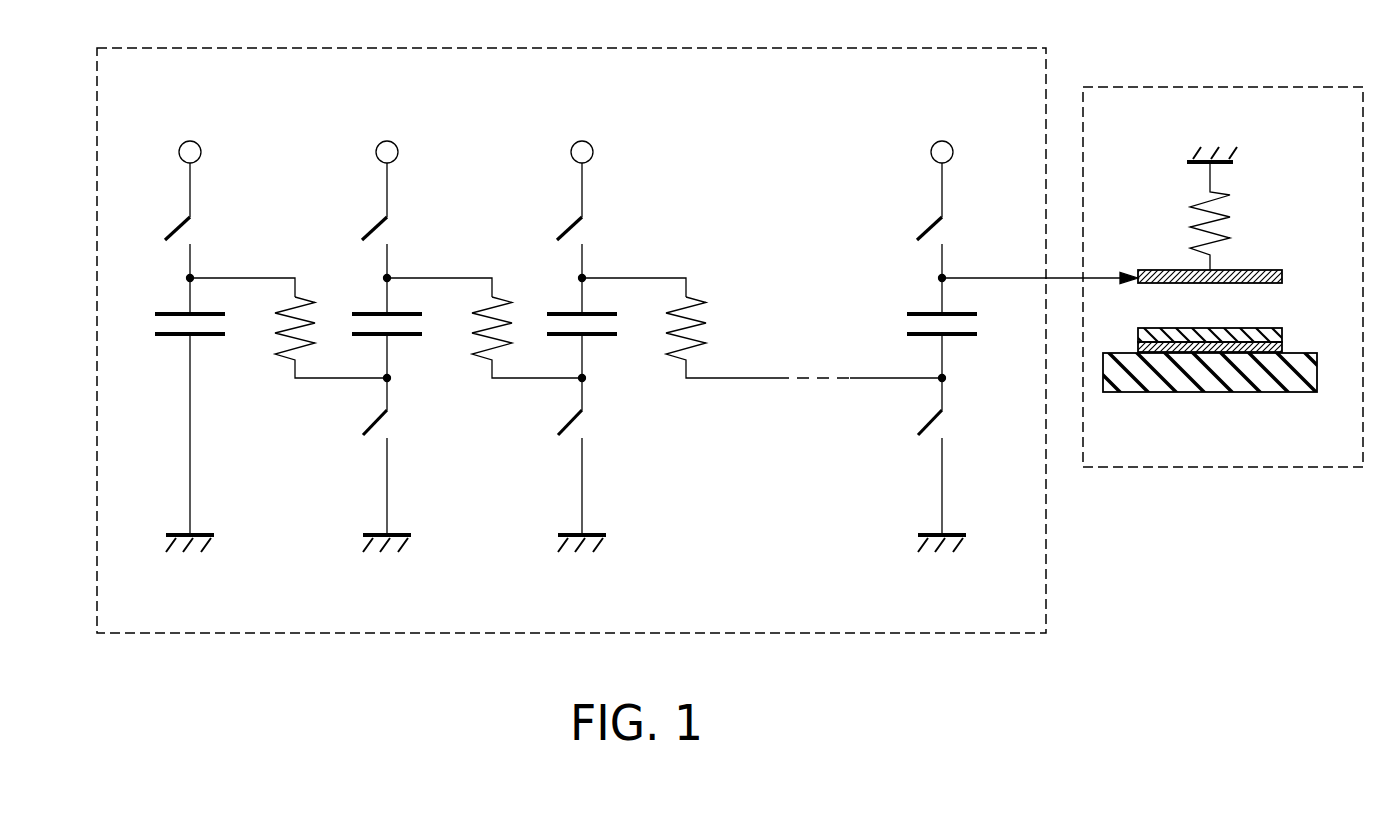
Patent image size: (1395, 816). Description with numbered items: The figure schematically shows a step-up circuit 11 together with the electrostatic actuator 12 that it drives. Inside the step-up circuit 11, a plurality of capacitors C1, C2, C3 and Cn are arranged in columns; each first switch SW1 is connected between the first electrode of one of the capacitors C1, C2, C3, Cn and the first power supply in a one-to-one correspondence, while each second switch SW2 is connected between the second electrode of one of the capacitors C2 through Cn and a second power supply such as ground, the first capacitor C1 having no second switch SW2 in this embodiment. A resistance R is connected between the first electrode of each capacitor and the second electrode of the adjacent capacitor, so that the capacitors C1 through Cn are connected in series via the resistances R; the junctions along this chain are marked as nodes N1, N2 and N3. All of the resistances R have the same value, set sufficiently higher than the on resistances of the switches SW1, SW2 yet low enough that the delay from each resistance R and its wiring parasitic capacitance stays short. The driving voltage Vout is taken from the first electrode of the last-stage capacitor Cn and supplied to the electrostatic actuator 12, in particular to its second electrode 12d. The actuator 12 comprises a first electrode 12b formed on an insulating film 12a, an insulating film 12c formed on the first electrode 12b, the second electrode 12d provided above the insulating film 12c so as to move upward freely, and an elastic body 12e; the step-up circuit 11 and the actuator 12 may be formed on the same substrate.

The step-up circuit 11 is at (745, 48).
The electrostatic actuator 12 is at (1261, 87).
The insulating film 12a is at (1277, 392).
The first electrode 12b is at (1282, 348).
The insulating film 12c is at (1282, 330).
The second electrode 12d is at (1282, 278).
The elastic body 12e is at (1237, 214).
The first switch SW1 is at (208, 229).
The second switch SW2 is at (406, 424).
The capacitor C1 is at (216, 337).
The capacitor C2 is at (413, 337).
The capacitor C3 is at (620, 326).
The capacitor Cn is at (975, 337).
The resistance R is at (331, 324).
The node N1 is at (242, 272).
The node N2 is at (439, 272).
The node N3 is at (634, 272).
The output voltage Vout is at (1040, 265).